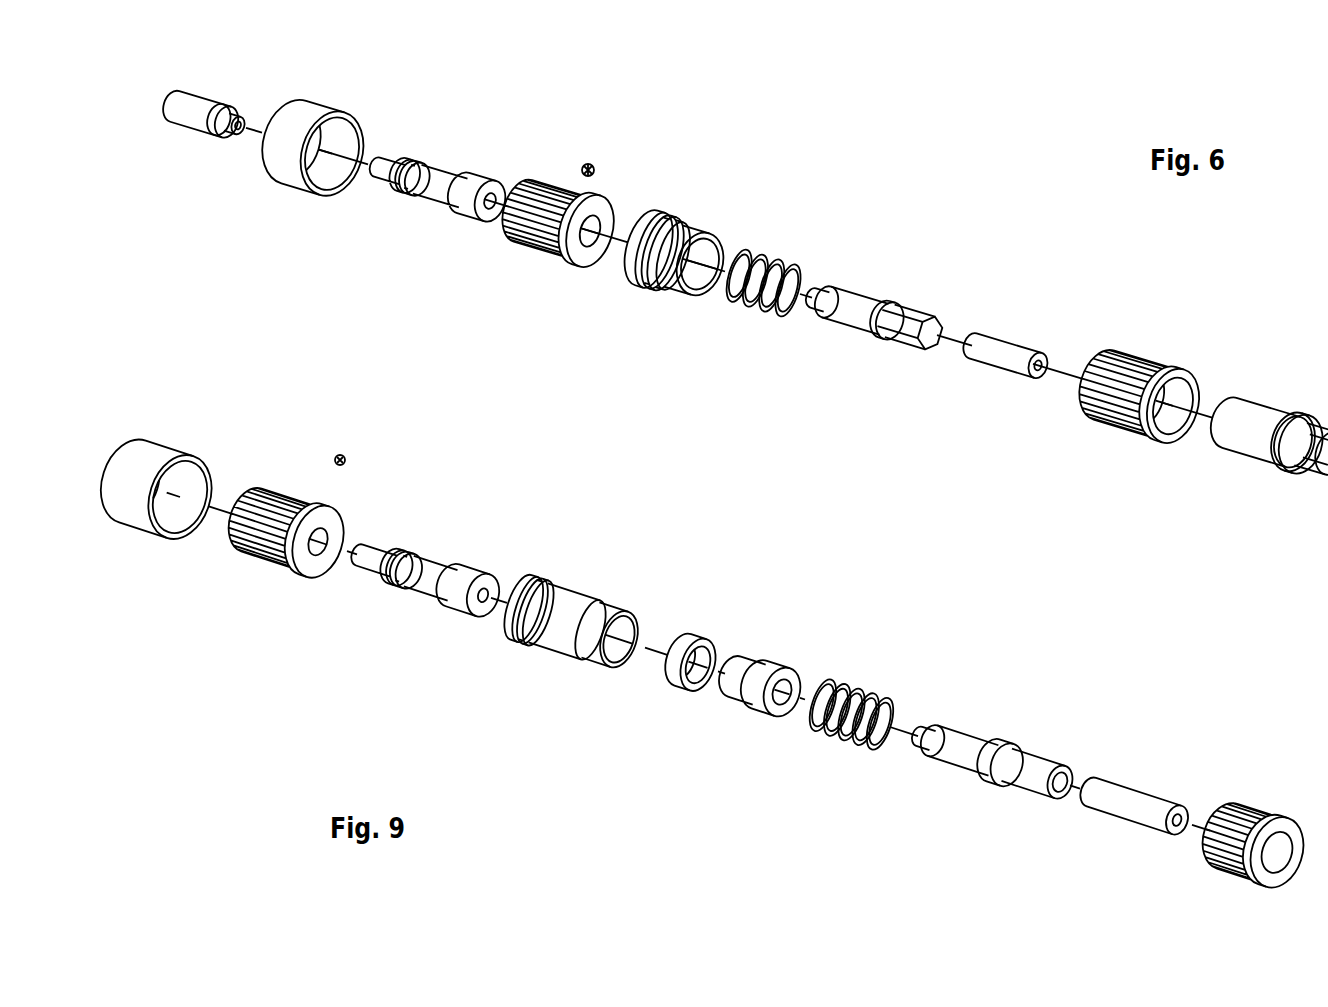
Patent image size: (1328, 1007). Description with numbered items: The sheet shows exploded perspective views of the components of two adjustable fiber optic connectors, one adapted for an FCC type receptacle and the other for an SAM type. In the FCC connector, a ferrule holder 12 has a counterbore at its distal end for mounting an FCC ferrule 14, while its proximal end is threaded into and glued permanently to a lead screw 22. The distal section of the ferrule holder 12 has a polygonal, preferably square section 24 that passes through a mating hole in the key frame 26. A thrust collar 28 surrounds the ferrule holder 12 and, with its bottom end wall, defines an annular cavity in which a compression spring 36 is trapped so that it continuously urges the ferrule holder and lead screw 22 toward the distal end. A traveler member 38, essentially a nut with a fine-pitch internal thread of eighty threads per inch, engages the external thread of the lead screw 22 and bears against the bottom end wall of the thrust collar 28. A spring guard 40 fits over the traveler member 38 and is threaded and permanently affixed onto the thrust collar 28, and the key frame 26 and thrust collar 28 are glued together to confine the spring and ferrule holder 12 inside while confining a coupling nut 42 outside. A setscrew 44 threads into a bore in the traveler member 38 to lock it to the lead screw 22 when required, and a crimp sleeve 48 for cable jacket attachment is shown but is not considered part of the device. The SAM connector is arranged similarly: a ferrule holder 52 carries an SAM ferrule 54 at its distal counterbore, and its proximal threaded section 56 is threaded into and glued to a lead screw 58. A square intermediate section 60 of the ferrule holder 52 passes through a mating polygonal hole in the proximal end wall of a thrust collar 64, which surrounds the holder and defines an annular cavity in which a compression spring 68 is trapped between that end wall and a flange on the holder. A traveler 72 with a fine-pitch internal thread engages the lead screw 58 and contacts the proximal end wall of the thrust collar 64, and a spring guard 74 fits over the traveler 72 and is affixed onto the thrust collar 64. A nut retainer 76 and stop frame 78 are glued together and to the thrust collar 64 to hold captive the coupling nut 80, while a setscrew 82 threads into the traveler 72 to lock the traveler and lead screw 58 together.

In FIG. 6, the crimp sleeve 48 is at (203, 92).
In FIG. 6, the spring guard 40 is at (350, 110).
In FIG. 6, the lead screw 22 is at (397, 157).
In FIG. 6, the traveler member 38 is at (573, 188).
In FIG. 6, the setscrew 44 is at (600, 168).
In FIG. 6, the thrust collar 28 is at (682, 225).
In FIG. 6, the compression spring 36 is at (760, 260).
In FIG. 6, the ferrule holder 12 is at (889, 316).
In FIG. 6, the square section 24 is at (918, 320).
In FIG. 6, the FCC ferrule 14 is at (1005, 357).
In FIG. 6, the coupling nut 42 is at (1145, 363).
In FIG. 6, the key frame 26 is at (1257, 408).
In FIG. 9, the spring guard 74 is at (140, 438).
In FIG. 9, the traveler 72 is at (283, 500).
In FIG. 9, the setscrew 82 is at (297, 497).
In FIG. 9, the lead screw 58 is at (433, 557).
In FIG. 9, the thrust collar 64 is at (598, 598).
In FIG. 9, the nut retainer 76 is at (695, 640).
In FIG. 9, the stop frame 78 is at (770, 660).
In FIG. 9, the compression spring 68 is at (863, 698).
In FIG. 9, the ferrule holder 52 is at (975, 761).
In FIG. 9, the threaded section 56 is at (925, 752).
In FIG. 9, the intermediate section 60 is at (967, 770).
In FIG. 9, the SAM ferrule 54 is at (1133, 790).
In FIG. 9, the coupling nut 80 is at (1262, 806).